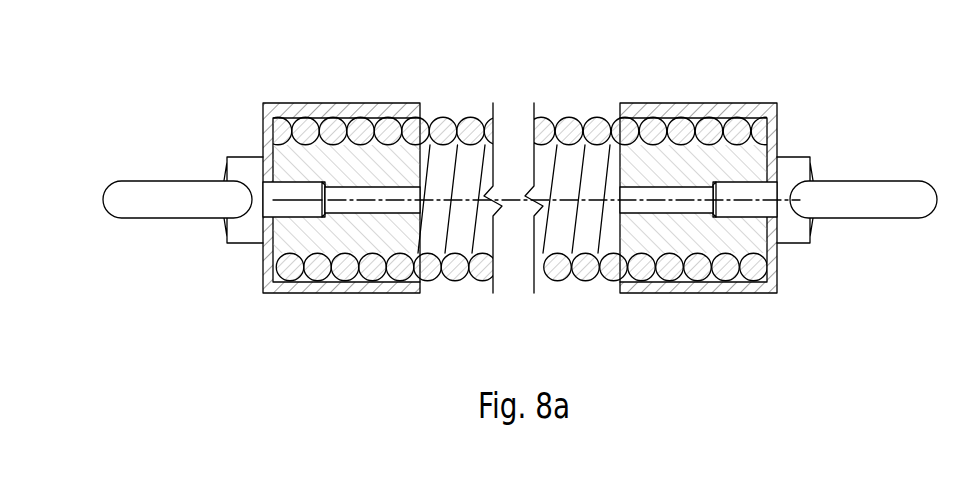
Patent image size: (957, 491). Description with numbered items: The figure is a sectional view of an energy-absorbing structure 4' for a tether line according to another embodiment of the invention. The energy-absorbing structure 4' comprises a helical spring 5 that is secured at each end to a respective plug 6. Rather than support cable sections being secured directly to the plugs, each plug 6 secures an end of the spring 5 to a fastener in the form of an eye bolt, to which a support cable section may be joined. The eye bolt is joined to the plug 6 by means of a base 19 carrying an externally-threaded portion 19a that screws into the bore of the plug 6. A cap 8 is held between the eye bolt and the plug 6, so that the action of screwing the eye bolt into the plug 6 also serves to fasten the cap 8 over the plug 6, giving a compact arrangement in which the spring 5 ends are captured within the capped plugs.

The energy-absorbing structure 4' is at (520, 158).
The spring 5 is at (609, 280).
The plug 6 is at (290, 226).
The cap 8 is at (300, 295).
The base 19 is at (797, 157).
The externally-threaded portion 19a is at (760, 190).